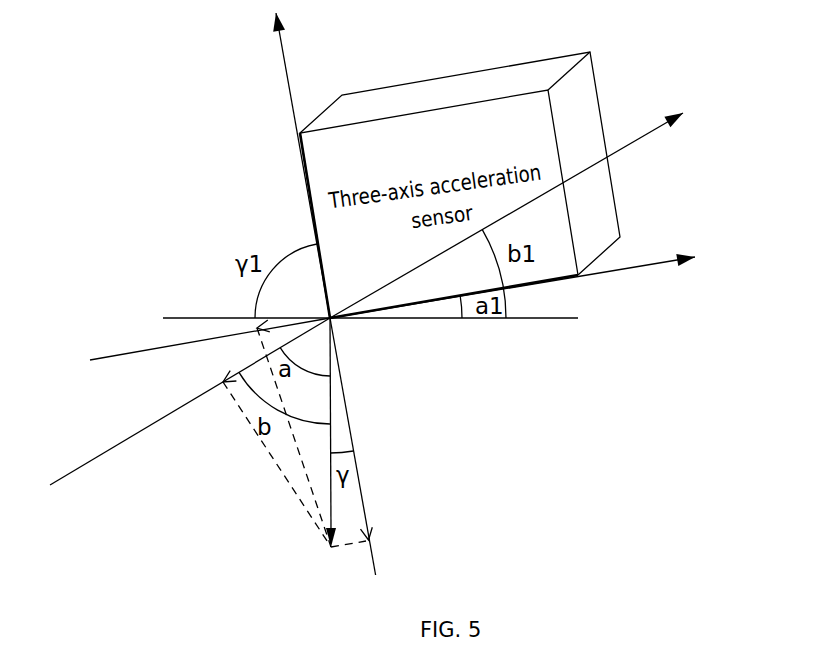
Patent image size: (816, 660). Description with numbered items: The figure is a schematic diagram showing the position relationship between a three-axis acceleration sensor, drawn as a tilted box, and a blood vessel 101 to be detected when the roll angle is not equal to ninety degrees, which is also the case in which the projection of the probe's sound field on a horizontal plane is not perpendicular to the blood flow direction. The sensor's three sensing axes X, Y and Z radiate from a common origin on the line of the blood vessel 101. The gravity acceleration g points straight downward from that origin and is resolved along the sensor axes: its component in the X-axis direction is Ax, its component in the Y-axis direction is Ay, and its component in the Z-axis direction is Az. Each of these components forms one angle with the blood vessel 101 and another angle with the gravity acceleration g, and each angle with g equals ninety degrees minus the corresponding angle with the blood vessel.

The blood vessel to be detected 101 is at (578, 318).
The X-axis X is at (401, 307).
The Y-axis Y is at (381, 299).
The Z-axis Z is at (324, 294).
The gravity acceleration g is at (326, 447).
The component of the gravity acceleration in the X-axis direction Ax is at (282, 433).
The component of the gravity acceleration in the Y-axis direction Ay is at (267, 459).
The component of the gravity acceleration in the Z-axis direction Az is at (373, 539).